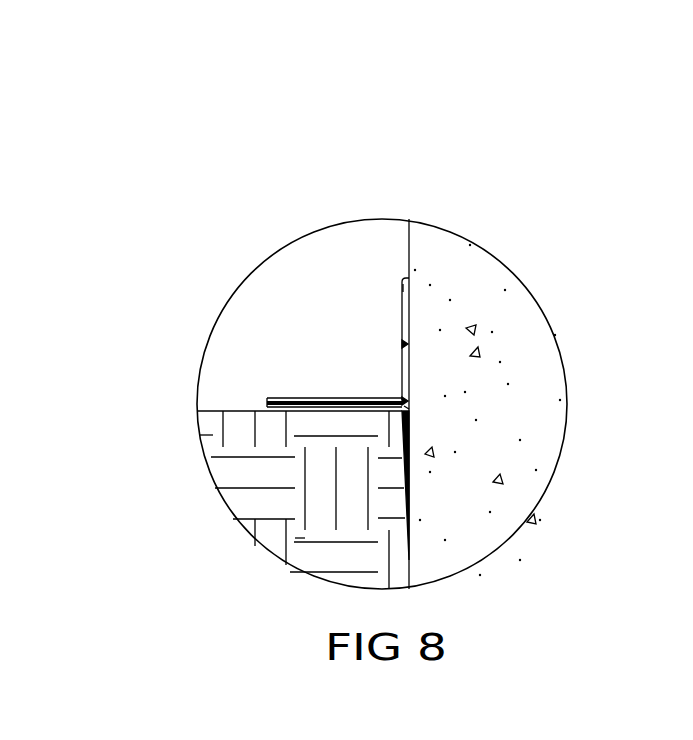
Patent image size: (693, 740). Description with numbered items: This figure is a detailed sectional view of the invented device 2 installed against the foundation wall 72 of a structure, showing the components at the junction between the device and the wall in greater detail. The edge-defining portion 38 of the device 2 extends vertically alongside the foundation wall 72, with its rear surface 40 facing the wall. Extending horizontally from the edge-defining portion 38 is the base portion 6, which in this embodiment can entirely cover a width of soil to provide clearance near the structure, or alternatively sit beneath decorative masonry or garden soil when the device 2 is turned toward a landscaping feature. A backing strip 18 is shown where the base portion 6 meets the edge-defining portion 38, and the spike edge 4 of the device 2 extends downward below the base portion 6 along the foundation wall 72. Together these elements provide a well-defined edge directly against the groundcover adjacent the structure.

The device 2 is at (418, 86).
The foundation wall 72 is at (403, 250).
The edge-defining portion 38 is at (399, 328).
The rear surface 40 is at (412, 325).
The base portion 6 is at (264, 400).
The backing strip 18 is at (413, 408).
The spike edge 4 is at (413, 488).